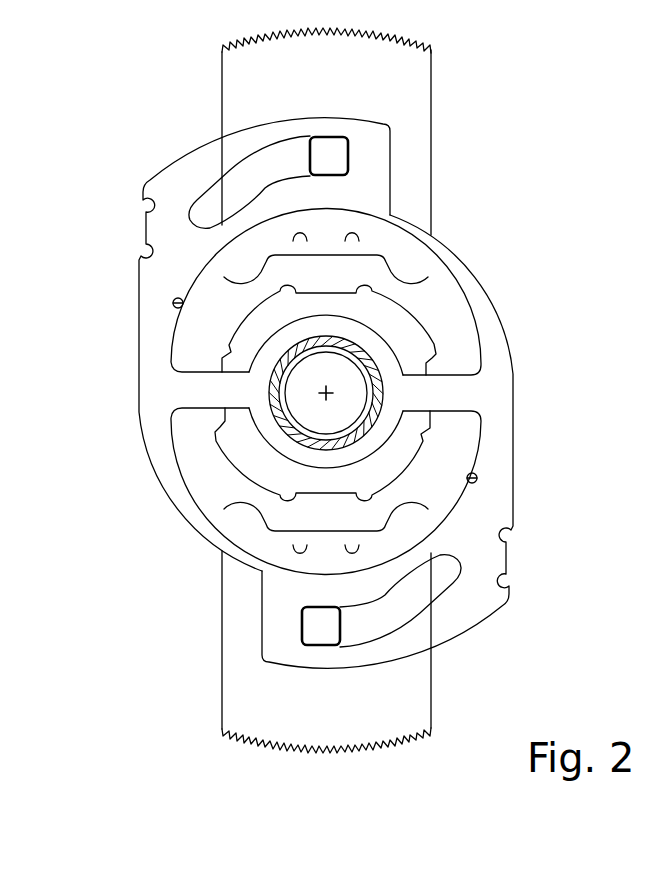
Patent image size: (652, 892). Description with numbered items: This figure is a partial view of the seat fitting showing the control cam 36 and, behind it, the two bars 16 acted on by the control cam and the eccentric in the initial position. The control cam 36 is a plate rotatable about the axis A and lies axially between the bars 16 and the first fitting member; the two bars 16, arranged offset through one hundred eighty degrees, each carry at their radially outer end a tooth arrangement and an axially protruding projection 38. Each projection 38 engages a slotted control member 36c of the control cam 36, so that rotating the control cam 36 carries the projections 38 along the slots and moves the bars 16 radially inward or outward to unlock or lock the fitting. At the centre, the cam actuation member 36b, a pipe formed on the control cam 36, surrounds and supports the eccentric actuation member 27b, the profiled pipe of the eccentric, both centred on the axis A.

The bar 16 is at (395, 83).
The control cam 36 is at (165, 334).
The cam actuation member 36b is at (272, 379).
The slotted control member 36c is at (293, 153).
The projection 38 is at (328, 163).
The eccentric actuation member 27b is at (283, 397).
The axis A is at (325, 394).